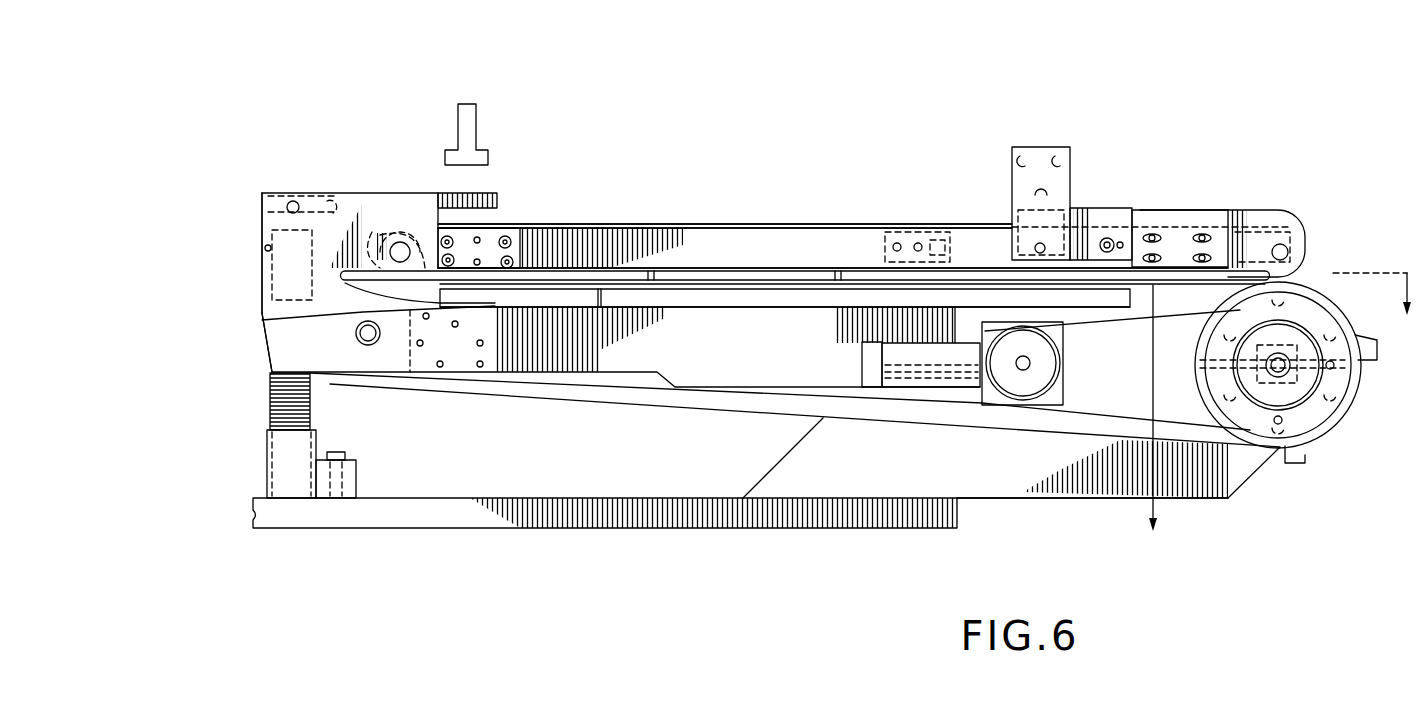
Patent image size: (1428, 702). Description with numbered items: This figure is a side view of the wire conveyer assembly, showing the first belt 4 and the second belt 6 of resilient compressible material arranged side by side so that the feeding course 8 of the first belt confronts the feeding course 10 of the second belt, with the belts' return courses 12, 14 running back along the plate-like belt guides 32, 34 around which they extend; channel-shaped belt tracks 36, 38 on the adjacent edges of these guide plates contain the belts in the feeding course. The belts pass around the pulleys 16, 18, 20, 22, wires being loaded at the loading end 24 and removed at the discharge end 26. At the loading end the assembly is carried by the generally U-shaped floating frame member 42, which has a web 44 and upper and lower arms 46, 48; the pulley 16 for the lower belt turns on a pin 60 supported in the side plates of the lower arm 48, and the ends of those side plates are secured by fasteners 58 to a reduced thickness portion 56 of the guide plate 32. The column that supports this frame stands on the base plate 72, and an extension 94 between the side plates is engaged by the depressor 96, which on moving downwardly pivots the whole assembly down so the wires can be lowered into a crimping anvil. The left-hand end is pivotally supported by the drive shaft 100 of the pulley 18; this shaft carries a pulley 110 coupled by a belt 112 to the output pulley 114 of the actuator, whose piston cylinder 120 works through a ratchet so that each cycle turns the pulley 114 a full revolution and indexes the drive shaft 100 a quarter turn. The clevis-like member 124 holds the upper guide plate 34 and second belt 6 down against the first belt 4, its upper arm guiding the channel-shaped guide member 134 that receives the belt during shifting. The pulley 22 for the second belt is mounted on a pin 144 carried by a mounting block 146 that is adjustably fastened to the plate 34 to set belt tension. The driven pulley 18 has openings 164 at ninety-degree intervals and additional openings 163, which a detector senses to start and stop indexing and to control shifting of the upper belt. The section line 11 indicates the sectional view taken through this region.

The first belt 4 is at (688, 408).
The second belt 6 is at (862, 225).
The feeding course 8 is at (710, 290).
The feeding course 10 is at (720, 255).
The section line 11- 11 is at (1282, 419).
The return course 12 is at (872, 420).
The return course 14 is at (795, 224).
The pulley 16 is at (362, 303).
The pulley 18 is at (1313, 427).
The pulley 20 is at (378, 230).
The pulley 22 is at (1300, 255).
The loading end 24 is at (322, 282).
The discharge end 26 is at (1318, 271).
The belt guide 32 is at (792, 362).
The belt guide 34 is at (792, 262).
The belt track 36 is at (812, 302).
The belt track 38 is at (902, 272).
The floating frame member 42 is at (322, 192).
The web 44 is at (300, 300).
The upper arm 46 is at (407, 190).
The lower arm 48 is at (500, 345).
The reduced thickness portion 56 is at (455, 310).
The fasteners 58 is at (478, 362).
The pin 60 is at (365, 345).
The base plate 72 is at (690, 530).
The extension 94 is at (497, 200).
The depressor 96 is at (480, 122).
The drive shaft 100 is at (1272, 355).
The pulley 110 is at (1292, 338).
The belt 112 is at (1130, 400).
The output pulley 114 is at (1092, 530).
The piston cylinder 120 is at (927, 378).
The clevis-like member 124 is at (1045, 147).
The channel-shaped guide member 134 is at (1107, 210).
The pin 144 is at (1283, 250).
The mounting block 146 is at (1262, 210).
The openings 163 is at (1395, 365).
The openings 164 is at (1337, 370).